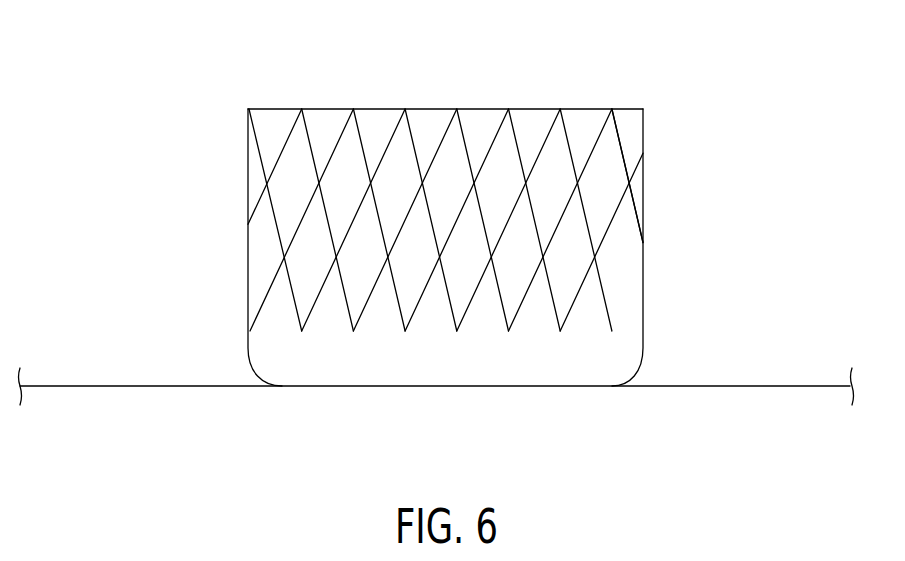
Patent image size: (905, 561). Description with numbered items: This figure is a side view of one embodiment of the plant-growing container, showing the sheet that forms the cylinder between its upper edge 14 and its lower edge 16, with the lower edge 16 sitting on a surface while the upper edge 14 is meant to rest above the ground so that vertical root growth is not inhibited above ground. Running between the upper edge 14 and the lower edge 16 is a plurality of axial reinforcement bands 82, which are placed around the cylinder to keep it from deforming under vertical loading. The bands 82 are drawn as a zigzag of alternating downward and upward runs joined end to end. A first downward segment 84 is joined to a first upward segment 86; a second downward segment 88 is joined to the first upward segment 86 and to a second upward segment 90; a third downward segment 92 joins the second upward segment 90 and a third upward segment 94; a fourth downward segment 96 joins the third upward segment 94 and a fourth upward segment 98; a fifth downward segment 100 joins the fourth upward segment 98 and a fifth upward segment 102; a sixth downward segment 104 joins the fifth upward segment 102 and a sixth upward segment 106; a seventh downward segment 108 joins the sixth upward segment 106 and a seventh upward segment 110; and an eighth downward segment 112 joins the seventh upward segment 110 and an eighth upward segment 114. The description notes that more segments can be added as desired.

The upper edge 14 is at (583, 108).
The lower edge 16 is at (644, 370).
The axial reinforcement bands 82 is at (312, 71).
The first downward segment 84 is at (259, 199).
The first upward segment 86 is at (318, 293).
The second downward segment 88 is at (410, 127).
The second upward segment 90 is at (465, 320).
The third downward segment 92 is at (568, 142).
The third upward segment 94 is at (634, 291).
The fourth downward segment 96 is at (327, 213).
The fourth upward segment 98 is at (363, 320).
The fifth downward segment 100 is at (465, 127).
The fifth upward segment 102 is at (593, 160).
The sixth downward segment 104 is at (645, 215).
The sixth upward segment 106 is at (345, 130).
The seventh downward segment 108 is at (412, 322).
The seventh upward segment 110 is at (513, 127).
The eighth downward segment 112 is at (565, 318).
The eighth upward segment 114 is at (612, 228).